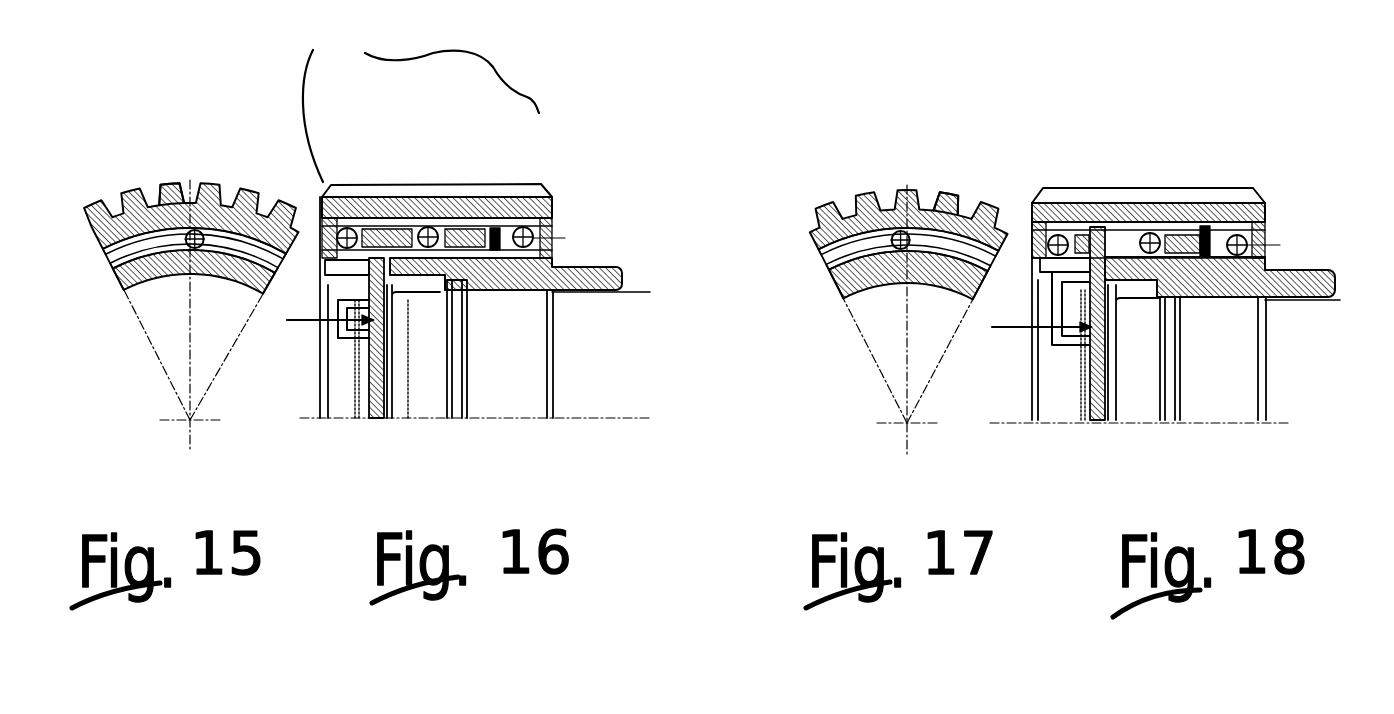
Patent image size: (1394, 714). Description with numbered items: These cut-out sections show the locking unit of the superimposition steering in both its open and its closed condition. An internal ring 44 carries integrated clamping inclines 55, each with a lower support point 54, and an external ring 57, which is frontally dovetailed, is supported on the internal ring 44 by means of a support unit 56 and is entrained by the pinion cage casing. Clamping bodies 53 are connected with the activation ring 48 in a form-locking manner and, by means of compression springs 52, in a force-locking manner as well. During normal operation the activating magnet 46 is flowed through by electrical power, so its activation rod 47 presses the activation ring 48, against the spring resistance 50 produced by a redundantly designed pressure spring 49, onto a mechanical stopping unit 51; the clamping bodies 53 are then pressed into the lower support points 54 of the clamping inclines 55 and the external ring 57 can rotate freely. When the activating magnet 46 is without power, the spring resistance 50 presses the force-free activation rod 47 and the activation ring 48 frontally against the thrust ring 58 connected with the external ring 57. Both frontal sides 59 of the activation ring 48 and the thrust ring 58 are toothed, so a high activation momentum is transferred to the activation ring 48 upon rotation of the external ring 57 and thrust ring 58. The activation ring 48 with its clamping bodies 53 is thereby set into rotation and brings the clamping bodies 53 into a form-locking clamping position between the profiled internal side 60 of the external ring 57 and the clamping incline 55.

In FIG. 15, the internal ring 44 is at (240, 267).
In FIG. 16, the internal ring 44 is at (592, 268).
In FIG. 17, the internal ring 44 is at (850, 285).
In FIG. 18, the internal ring 44 is at (1320, 273).
In FIG. 16, the activating magnet 46 is at (509, 394).
In FIG. 18, the activating magnet 46 is at (1233, 400).
In FIG. 16, the activation rod 47 is at (388, 410).
In FIG. 18, the activation rod 47 is at (1117, 413).
In FIG. 15, the activation ring 48 is at (163, 237).
In FIG. 16, the activation ring 48 is at (375, 407).
In FIG. 17, the activation ring 48 is at (830, 255).
In FIG. 18, the activation ring 48 is at (1105, 245).
In FIG. 16, the pressure spring 49 is at (358, 320).
In FIG. 18, the pressure spring 49 is at (1065, 330).
In FIG. 16, the spring resistance 50 is at (287, 321).
In FIG. 18, the spring resistance 50 is at (1013, 330).
In FIG. 16, the mechanical stopping unit 51 is at (373, 253).
In FIG. 15, the compression springs 52 is at (150, 250).
In FIG. 15, the clamping bodies 53 is at (197, 230).
In FIG. 16, the clamping bodies 53 is at (430, 250).
In FIG. 17, the clamping bodies 53 is at (885, 225).
In FIG. 18, the clamping bodies 53 is at (1150, 256).
In FIG. 15, the lower support points 54 is at (190, 247).
In FIG. 15, the clamping inclines 55 is at (217, 270).
In FIG. 17, the clamping inclines 55 is at (890, 285).
In FIG. 16, the support unit 56 is at (533, 215).
In FIG. 16, the external ring 57 is at (428, 225).
In FIG. 17, the external ring 57 is at (908, 200).
In FIG. 18, the external ring 57 is at (1250, 197).
In FIG. 18, the thrust ring 58 is at (1203, 267).
In FIG. 18, the frontal sides 59 is at (1200, 280).
In FIG. 17, the internal side 60 is at (980, 205).